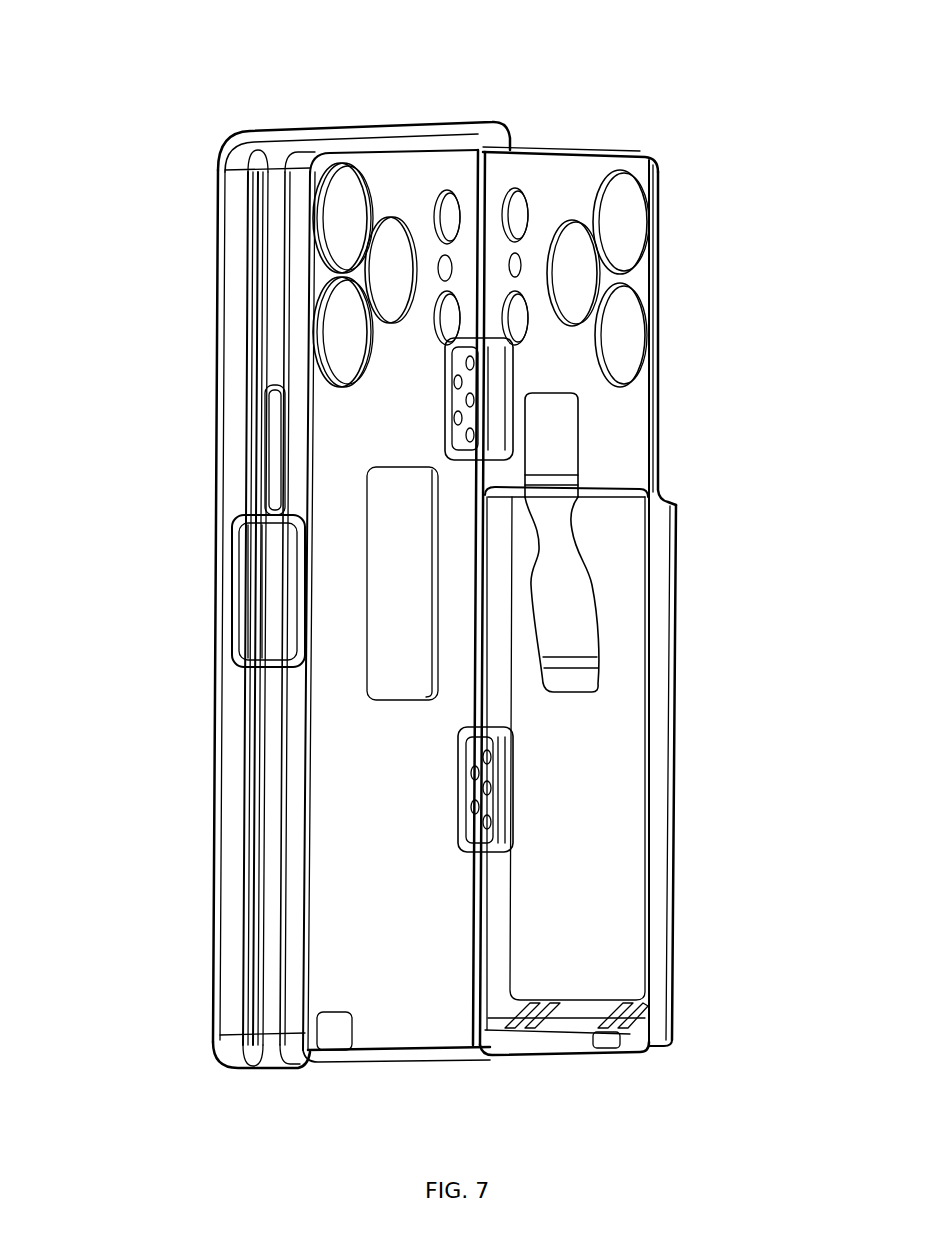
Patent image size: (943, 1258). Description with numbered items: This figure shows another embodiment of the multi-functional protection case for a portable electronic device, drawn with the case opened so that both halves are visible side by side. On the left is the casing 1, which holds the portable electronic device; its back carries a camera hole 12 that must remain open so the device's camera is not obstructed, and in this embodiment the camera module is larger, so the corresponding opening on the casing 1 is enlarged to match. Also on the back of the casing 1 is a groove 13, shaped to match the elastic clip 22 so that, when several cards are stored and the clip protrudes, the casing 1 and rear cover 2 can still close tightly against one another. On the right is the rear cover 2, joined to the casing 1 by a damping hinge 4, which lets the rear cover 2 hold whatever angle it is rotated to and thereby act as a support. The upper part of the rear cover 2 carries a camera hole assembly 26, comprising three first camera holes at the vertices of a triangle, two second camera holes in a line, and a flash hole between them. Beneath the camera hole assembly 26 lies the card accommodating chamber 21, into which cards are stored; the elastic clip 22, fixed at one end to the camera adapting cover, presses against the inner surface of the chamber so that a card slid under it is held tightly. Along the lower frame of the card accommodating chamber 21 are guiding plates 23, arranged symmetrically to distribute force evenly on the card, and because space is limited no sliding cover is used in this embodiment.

The casing 1 is at (279, 534).
The camera hole 12 is at (340, 195).
The groove 13 is at (400, 592).
The damping hinge 4 is at (445, 408).
The rear cover 2 is at (653, 589).
The camera hole assembly 26 is at (630, 226).
The card accommodating chamber 21 is at (632, 833).
The elastic clip 22 is at (580, 603).
The guiding plate 23 is at (620, 1020).